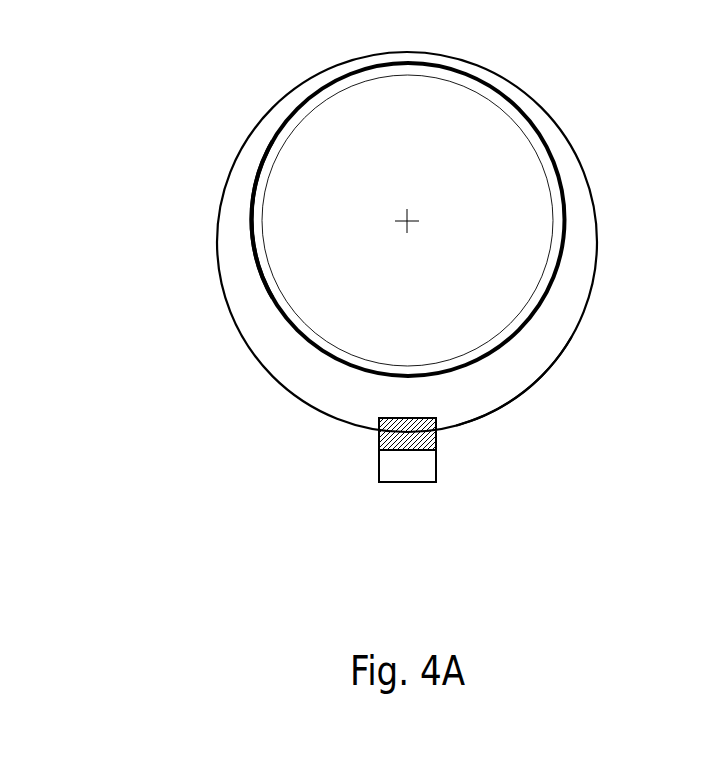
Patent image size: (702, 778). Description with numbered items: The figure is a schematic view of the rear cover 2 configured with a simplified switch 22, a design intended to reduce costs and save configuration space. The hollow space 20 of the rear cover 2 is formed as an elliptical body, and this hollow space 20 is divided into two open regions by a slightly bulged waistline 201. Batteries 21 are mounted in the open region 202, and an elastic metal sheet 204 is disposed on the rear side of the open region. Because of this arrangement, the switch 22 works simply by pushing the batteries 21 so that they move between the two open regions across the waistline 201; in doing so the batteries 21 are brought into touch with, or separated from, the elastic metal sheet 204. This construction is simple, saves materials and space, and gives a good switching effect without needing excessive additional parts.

The rear cover 2 is at (592, 191).
The hollow space 20 is at (280, 360).
The waistline 201 is at (248, 247).
The open region 202 is at (490, 377).
The batteries 21 is at (477, 132).
The switch 22 is at (358, 495).
The elastic metal sheet 204 is at (437, 468).